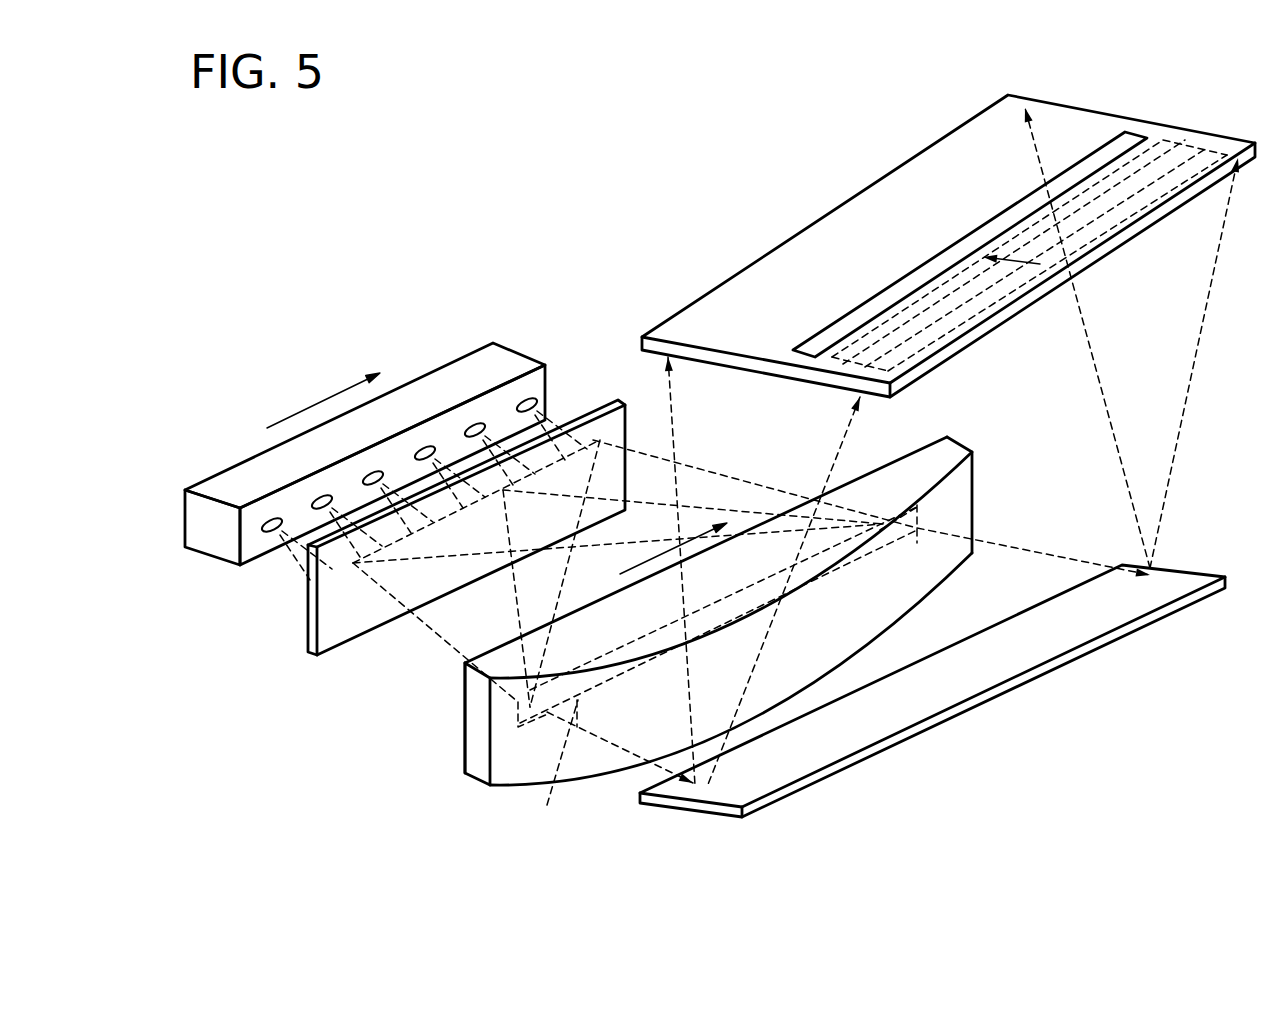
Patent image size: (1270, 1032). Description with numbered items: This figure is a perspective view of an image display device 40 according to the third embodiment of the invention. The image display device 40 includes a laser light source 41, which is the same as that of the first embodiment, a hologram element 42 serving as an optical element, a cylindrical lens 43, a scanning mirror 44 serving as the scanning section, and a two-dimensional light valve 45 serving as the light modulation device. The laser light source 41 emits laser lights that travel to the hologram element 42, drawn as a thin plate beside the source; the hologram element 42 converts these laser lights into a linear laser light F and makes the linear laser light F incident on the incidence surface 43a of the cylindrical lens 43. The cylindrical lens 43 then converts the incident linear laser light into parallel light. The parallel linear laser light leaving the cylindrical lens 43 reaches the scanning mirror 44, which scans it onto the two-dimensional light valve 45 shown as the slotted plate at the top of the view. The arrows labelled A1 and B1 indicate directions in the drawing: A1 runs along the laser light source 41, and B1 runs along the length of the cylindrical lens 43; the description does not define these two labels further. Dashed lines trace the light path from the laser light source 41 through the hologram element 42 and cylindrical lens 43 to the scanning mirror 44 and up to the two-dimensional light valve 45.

The image display device 40 is at (544, 181).
The laser light source 41 is at (478, 321).
The hologram element 42 is at (312, 660).
The cylindrical lens 43 is at (668, 652).
The incidence surface 43a is at (463, 722).
The scanning mirror 44 is at (690, 812).
The two-dimensional light valve 45 is at (1120, 115).
The arrangement direction of light emitting elements A1 is at (312, 405).
The longitudinal direction of lens B1 is at (640, 565).
The linear laser light F is at (548, 772).